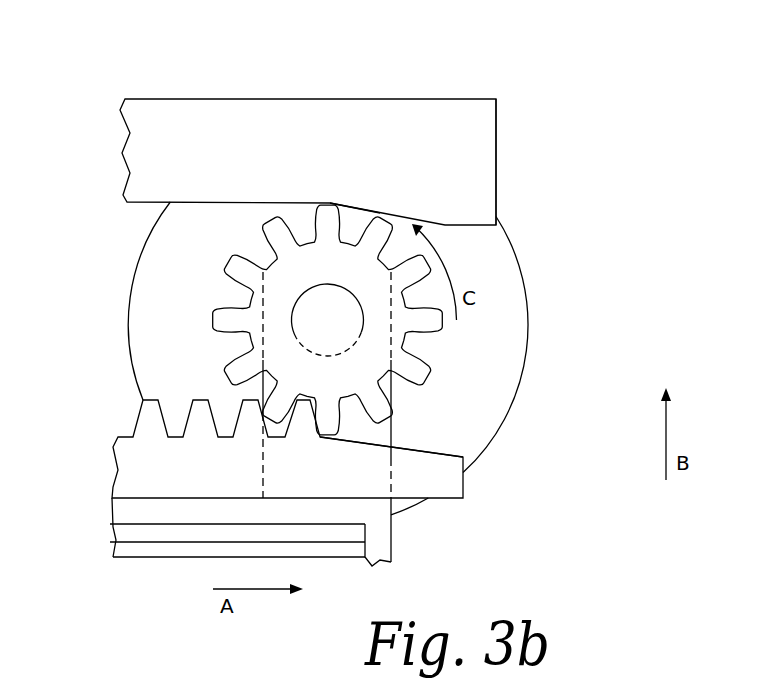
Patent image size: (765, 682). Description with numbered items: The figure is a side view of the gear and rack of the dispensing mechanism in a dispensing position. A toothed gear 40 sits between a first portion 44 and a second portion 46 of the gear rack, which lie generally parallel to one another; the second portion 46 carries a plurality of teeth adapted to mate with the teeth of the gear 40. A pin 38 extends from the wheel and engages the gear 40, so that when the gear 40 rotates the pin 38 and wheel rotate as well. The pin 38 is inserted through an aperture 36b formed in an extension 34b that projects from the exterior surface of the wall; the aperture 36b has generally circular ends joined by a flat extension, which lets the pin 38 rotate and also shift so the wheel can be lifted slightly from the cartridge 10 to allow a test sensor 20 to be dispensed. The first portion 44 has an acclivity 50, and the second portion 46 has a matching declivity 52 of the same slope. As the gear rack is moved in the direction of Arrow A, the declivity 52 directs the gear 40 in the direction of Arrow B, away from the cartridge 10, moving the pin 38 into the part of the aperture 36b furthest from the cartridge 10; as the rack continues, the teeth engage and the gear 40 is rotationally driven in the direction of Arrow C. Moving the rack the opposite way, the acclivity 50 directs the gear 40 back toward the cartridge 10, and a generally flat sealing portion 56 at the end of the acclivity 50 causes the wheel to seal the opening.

The cartridge 10 is at (392, 542).
The test sensor 20 is at (125, 533).
The extension 34b is at (393, 433).
The aperture 36b is at (262, 304).
The pin 38 is at (312, 329).
The gear 40 is at (400, 345).
The first portion 44 is at (142, 99).
The second portion 46 is at (168, 500).
The acclivity 50 is at (364, 190).
The declivity 52 is at (360, 470).
The sealing portion 56 is at (483, 226).